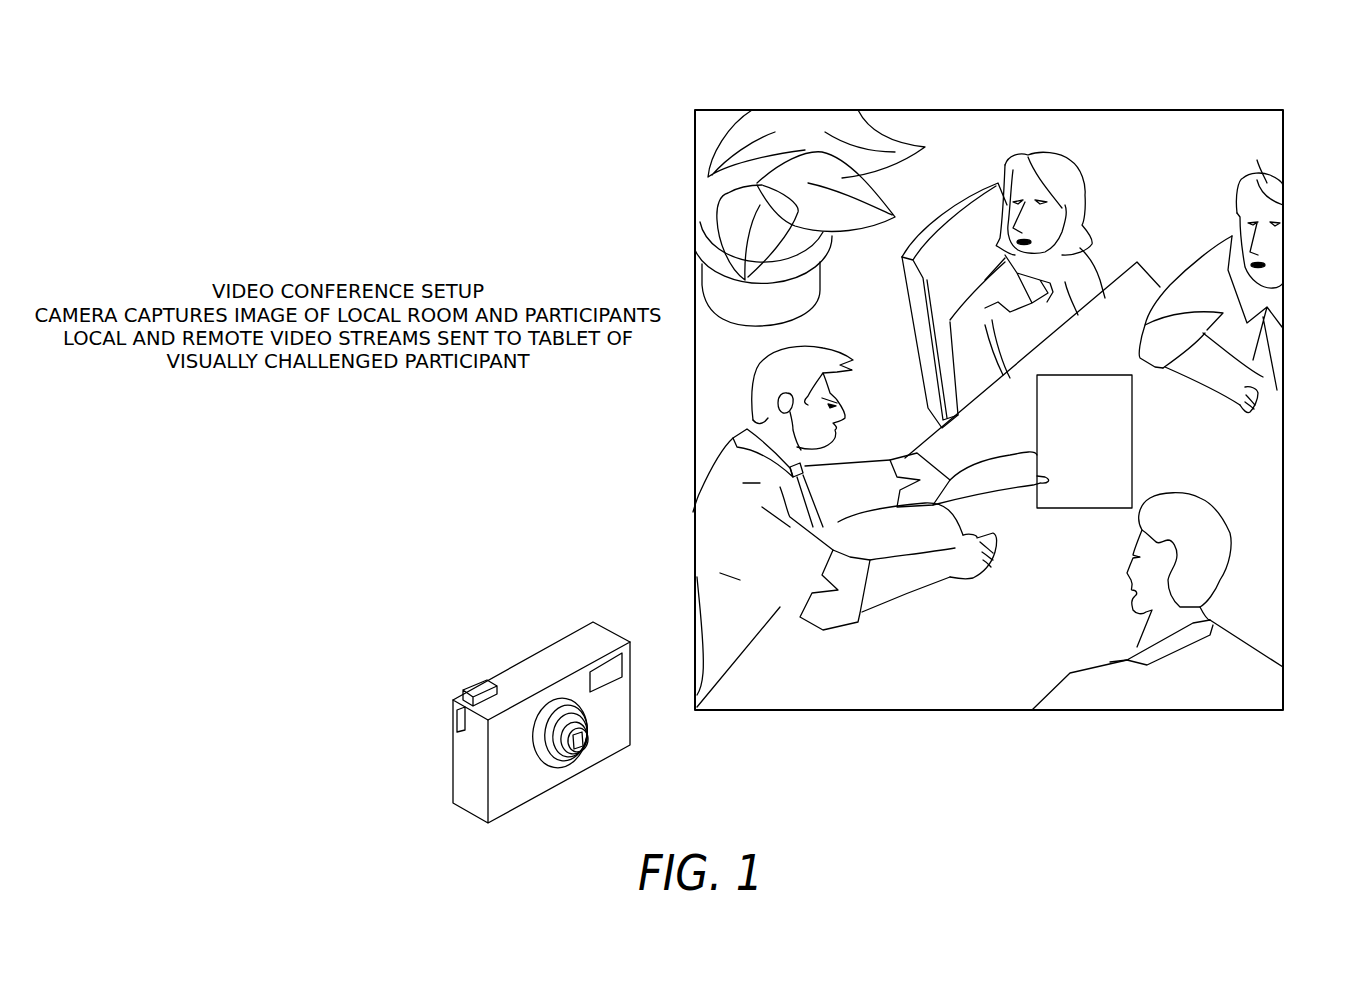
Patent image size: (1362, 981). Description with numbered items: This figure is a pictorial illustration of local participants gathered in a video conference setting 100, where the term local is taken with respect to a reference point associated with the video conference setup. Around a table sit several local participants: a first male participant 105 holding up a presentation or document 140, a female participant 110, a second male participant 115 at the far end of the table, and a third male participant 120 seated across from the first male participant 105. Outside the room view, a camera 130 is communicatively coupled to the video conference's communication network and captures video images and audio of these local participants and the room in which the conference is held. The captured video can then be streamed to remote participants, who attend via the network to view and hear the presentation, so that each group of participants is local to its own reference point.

The video conference setting 100 is at (1308, 92).
The first male local participant 105 is at (723, 473).
The female local participant 110 is at (1057, 161).
The second male local participant 115 is at (1267, 183).
The third male local participant 120 is at (1187, 500).
The camera 130 is at (593, 622).
The presentation or document 140 is at (1082, 375).